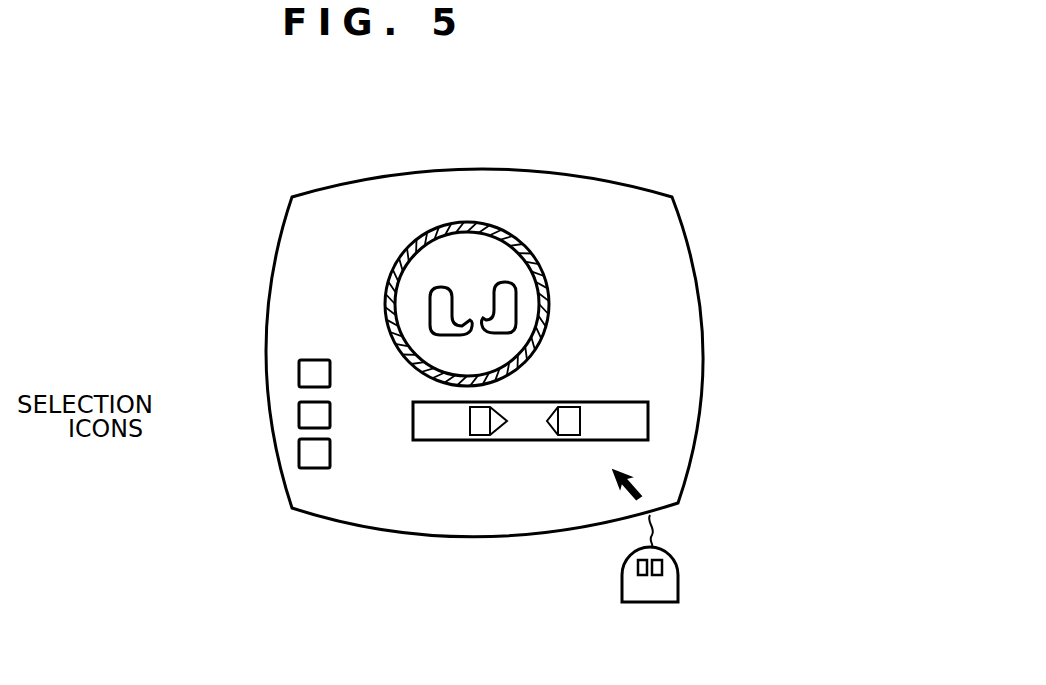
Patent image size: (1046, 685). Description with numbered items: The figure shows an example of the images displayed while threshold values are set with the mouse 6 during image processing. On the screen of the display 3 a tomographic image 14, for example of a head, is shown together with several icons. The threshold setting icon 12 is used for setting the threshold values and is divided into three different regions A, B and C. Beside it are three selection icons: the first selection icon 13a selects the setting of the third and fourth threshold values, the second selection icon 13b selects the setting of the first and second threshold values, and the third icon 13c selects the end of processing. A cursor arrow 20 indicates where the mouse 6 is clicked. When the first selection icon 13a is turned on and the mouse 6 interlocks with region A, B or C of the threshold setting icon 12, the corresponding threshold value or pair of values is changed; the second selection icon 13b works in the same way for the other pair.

The display 3 is at (522, 168).
The tomographic image 14 is at (548, 278).
The threshold setting icon 12 is at (648, 413).
The first selection icon 13a is at (299, 373).
The second selection icon 13b is at (299, 417).
The selection icon for end of processing 13c is at (299, 458).
The cursor arrow 20 is at (633, 487).
The mouse 6 is at (678, 563).